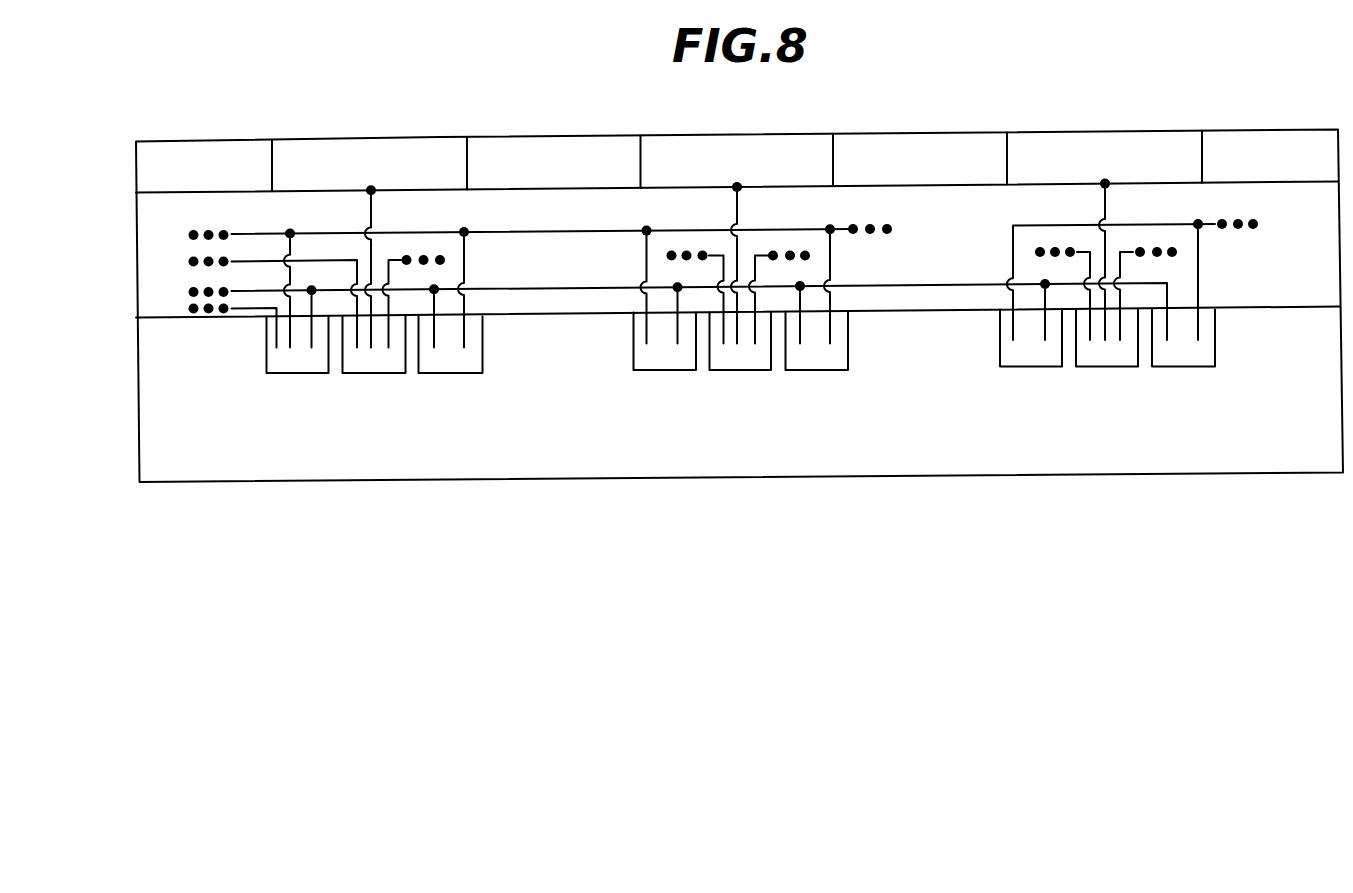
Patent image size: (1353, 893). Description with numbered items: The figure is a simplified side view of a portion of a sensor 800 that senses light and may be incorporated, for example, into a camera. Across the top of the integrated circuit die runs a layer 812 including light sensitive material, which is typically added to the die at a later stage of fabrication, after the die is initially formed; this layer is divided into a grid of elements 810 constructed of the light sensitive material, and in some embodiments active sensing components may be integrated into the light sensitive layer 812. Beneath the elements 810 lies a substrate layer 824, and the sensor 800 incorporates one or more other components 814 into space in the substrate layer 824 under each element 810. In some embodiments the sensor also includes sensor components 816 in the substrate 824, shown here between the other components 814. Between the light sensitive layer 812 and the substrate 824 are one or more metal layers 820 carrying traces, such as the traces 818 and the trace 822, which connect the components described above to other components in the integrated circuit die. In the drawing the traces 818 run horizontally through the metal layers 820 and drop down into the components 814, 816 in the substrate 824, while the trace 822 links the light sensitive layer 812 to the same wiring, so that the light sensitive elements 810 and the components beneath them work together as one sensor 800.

The sensor 800 is at (870, 522).
The element 810 is at (332, 148).
The layer including light sensitive material 812 is at (165, 162).
The other components 814 is at (298, 373).
The sensor components 816 is at (374, 373).
The traces 818 is at (243, 291).
The metal layers 820 is at (157, 290).
The trace 822 is at (372, 208).
The substrate layer 824 is at (157, 417).